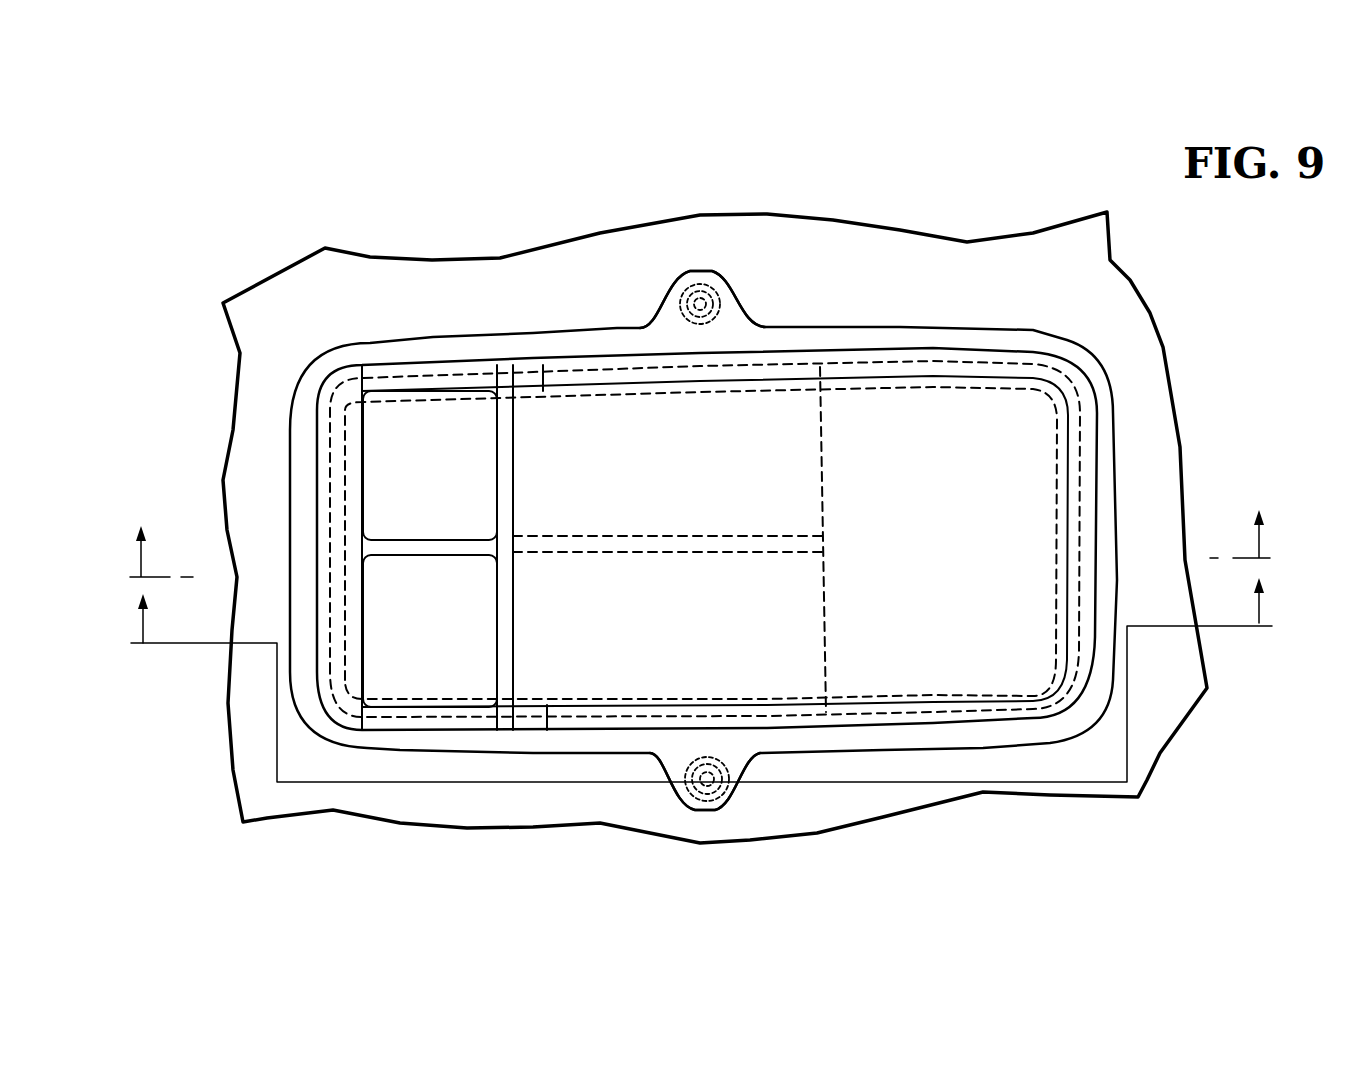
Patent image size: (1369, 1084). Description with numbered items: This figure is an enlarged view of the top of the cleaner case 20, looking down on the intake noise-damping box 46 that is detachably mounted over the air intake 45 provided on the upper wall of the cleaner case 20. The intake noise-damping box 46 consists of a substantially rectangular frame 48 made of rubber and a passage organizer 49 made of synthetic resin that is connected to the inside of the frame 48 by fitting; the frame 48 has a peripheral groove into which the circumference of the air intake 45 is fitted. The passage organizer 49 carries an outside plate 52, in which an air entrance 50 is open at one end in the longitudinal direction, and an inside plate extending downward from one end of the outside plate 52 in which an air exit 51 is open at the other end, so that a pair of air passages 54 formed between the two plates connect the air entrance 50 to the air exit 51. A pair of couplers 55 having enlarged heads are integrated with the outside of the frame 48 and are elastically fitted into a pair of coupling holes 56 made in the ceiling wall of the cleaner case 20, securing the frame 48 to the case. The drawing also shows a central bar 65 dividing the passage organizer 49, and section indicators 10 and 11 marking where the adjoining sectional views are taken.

The cleaner case 20 is at (757, 232).
The intake noise-damping box 46 is at (904, 318).
The frame 48 is at (1108, 497).
The passage organizer 49 is at (748, 425).
The air entrance 50 is at (452, 484).
The air exit 51 is at (823, 588).
The outside plate 52 is at (587, 407).
The air passages 54 is at (695, 548).
The couplers 55 is at (708, 268).
The coupling holes 56 is at (690, 268).
The center bar 65 is at (448, 542).
The air intake 45 is at (925, 695).
The section line 10- 10 is at (699, 538).
The section line 11- 11 is at (700, 606).